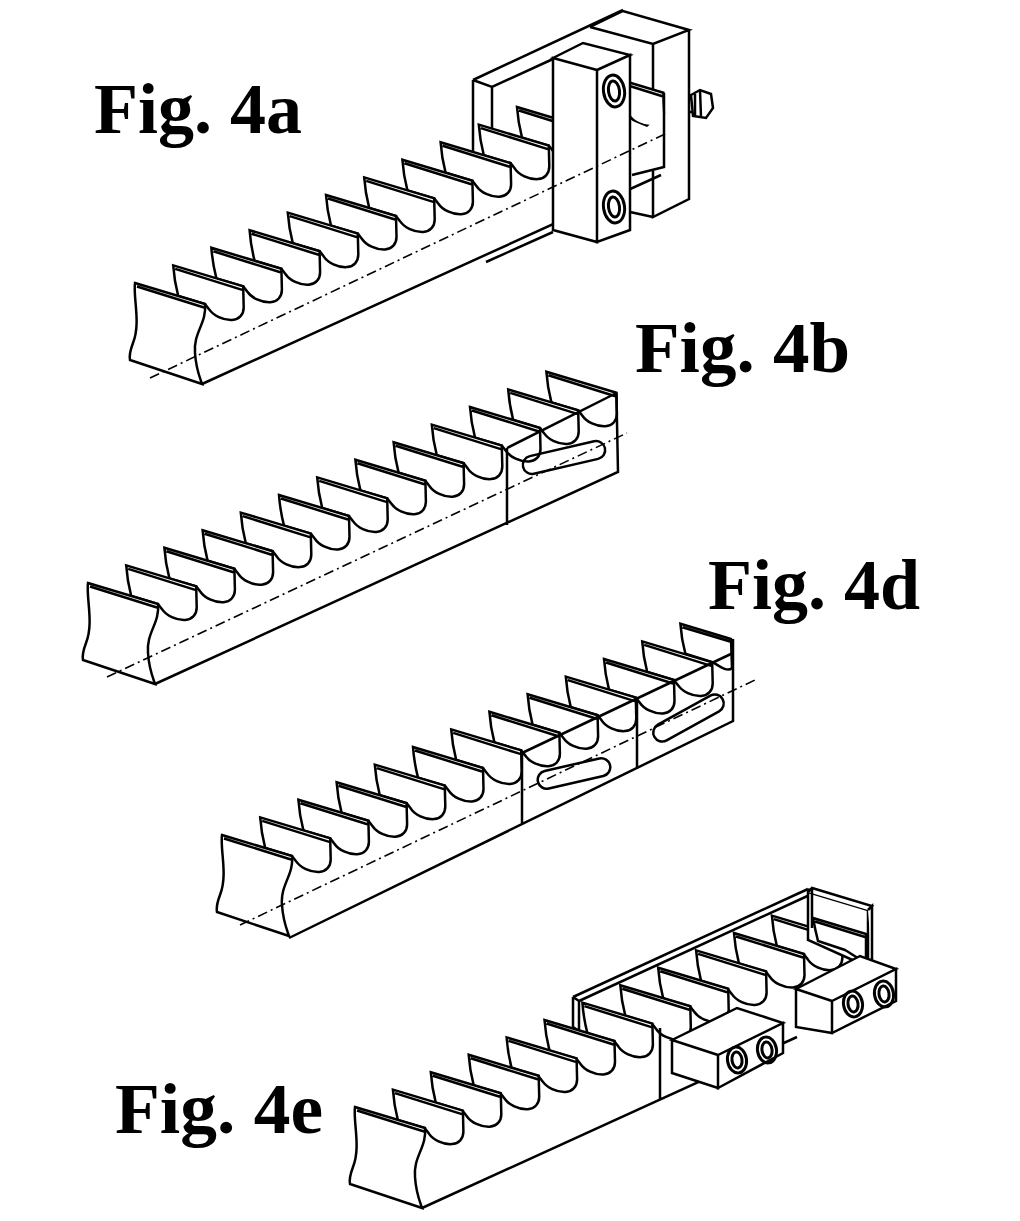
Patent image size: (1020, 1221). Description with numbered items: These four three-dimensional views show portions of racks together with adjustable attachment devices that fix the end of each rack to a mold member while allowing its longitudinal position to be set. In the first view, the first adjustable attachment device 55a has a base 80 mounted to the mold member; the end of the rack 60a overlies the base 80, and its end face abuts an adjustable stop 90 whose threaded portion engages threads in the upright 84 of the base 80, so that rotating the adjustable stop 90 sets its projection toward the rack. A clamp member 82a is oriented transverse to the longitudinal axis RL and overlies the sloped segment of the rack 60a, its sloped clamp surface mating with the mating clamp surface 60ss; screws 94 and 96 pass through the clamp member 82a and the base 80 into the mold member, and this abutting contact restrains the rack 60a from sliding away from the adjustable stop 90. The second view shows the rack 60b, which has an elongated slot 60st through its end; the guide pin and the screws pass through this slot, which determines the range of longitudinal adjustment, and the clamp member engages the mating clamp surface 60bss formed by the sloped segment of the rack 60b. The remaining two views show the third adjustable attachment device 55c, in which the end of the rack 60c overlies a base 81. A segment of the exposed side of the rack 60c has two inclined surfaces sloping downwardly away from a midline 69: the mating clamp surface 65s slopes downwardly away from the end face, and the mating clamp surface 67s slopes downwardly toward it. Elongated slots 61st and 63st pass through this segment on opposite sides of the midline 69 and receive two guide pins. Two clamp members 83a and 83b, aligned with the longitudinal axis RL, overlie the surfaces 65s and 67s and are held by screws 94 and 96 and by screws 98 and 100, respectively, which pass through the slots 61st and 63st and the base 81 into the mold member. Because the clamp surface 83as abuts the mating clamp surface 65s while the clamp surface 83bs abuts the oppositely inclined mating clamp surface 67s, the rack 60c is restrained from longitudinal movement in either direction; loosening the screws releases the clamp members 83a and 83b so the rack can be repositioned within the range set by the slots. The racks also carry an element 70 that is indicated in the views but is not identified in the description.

In FIG. 4A, the first adjustable attachment device 55a is at (478, 42).
In FIG. 4E, the third adjustable attachment device 55c is at (883, 874).
In FIG. 4A, the rack 60a is at (409, 228).
In FIG. 4B, the rack 60b is at (392, 533).
In FIG. 4D, the rack 60c is at (501, 781).
In FIG. 4E, the rack 60c is at (644, 1048).
In FIG. 4A, the rack teeth 70 is at (340, 216).
In FIG. 4B, the rack teeth 70 is at (213, 543).
In FIG. 4D, the rack teeth 70 is at (435, 769).
In FIG. 4E, the rack teeth 70 is at (572, 1056).
In FIG. 4A, the base 80 is at (526, 99).
In FIG. 4A, the clamp member 82a is at (576, 134).
In FIG. 4A, the upright 84 is at (684, 78).
In FIG. 4A, the adjustable stop 90 is at (706, 94).
In FIG. 4A, the screw 94 is at (612, 82).
In FIG. 4E, the screw 94 is at (769, 1067).
In FIG. 4A, the screw 96 is at (612, 208).
In FIG. 4E, the screw 96 is at (734, 1082).
In FIG. 4E, the screw 98 is at (848, 1028).
In FIG. 4E, the screw 100 is at (890, 1010).
In FIG. 4A, the mating clamp surface 60ss is at (688, 192).
In FIG. 4B, the mating clamp surface 60bss is at (608, 432).
In FIG. 4B, the elongated slot 60st is at (568, 460).
In FIG. 4D, the elongated slot 61st is at (583, 773).
In FIG. 4D, the elongated slot 63st is at (700, 723).
In FIG. 4D, the mating clamp surface 65s is at (588, 750).
In FIG. 4E, the mating clamp surface 65s is at (723, 1003).
In FIG. 4D, the mating clamp surface 67s is at (733, 653).
In FIG. 4E, the mating clamp surface 67s is at (872, 932).
In FIG. 4D, the midline 69 is at (634, 773).
In FIG. 4E, the midline 69 is at (773, 987).
In FIG. 4E, the base 81 is at (786, 905).
In FIG. 4E, the clamp member 83a is at (715, 1080).
In FIG. 4E, the clamp member 83b is at (836, 1035).
In FIG. 4E, the clamp surface 83as is at (637, 965).
In FIG. 4E, the clamp surface 83bs is at (838, 947).
In FIG. 4A, the longitudinal axis RL is at (391, 261).
In FIG. 4B, the longitudinal axis RL is at (352, 563).
In FIG. 4D, the longitudinal axis RL is at (477, 808).